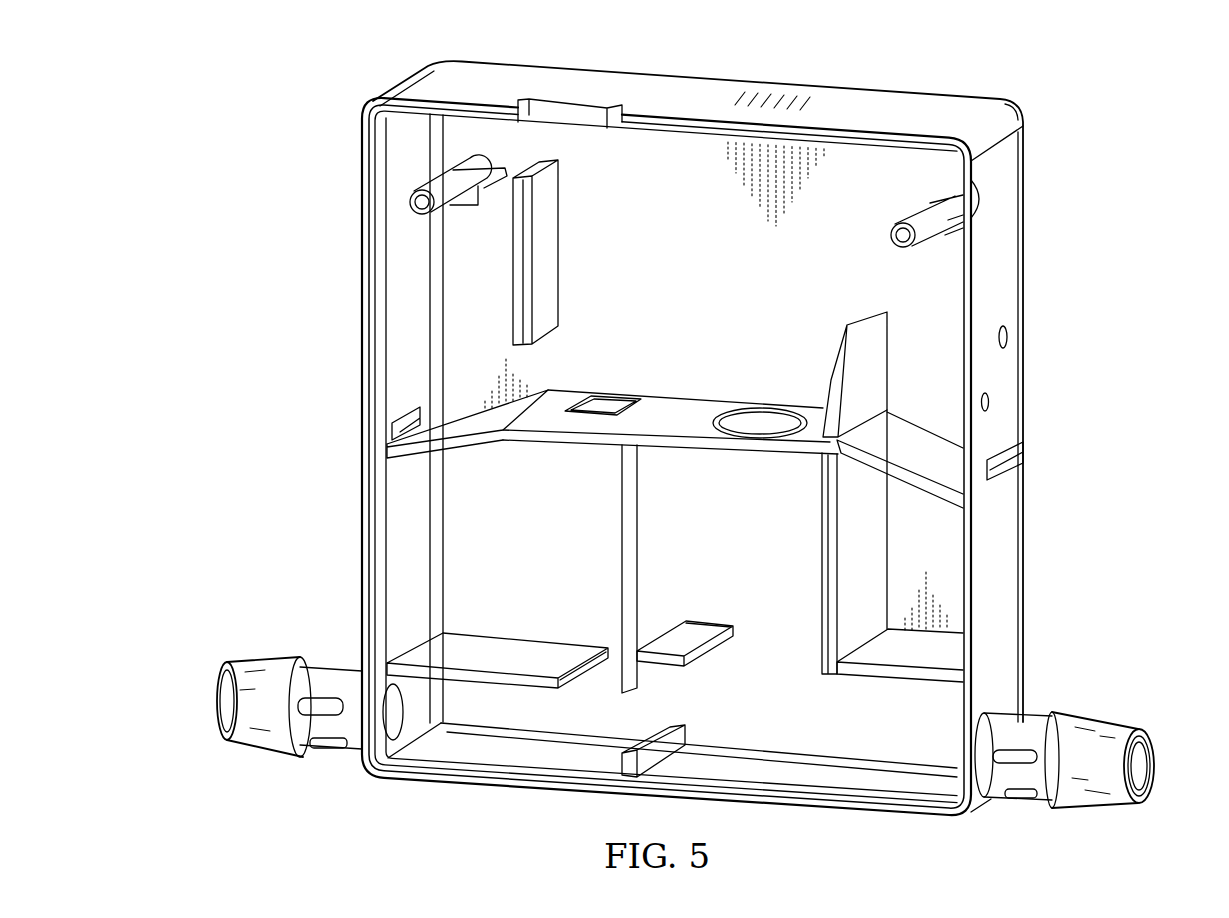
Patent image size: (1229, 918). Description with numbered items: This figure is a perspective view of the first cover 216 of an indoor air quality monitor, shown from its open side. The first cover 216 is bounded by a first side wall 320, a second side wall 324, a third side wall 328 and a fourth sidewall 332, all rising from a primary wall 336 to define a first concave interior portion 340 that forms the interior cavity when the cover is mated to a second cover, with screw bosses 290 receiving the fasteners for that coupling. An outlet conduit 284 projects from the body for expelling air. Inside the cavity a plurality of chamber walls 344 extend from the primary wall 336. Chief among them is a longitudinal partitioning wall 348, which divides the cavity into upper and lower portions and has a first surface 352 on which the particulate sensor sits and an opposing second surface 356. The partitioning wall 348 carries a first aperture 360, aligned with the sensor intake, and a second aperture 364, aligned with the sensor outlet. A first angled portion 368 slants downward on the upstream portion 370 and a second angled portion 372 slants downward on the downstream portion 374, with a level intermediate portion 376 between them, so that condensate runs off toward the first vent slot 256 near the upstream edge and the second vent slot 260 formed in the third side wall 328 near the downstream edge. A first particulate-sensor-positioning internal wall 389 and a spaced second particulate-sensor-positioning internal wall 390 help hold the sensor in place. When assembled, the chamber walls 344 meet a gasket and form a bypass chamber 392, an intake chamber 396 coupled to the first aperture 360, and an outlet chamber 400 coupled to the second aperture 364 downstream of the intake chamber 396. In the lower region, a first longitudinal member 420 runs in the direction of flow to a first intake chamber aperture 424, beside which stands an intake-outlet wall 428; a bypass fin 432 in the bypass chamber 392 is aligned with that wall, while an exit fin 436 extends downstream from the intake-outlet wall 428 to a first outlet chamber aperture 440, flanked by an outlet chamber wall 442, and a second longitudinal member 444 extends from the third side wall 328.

The first cover 216 is at (893, 99).
The first vent slot 256 is at (397, 418).
The second vent slot 260 is at (1007, 475).
The outlet conduit 284 is at (1094, 806).
The screw bosses 290 is at (438, 210).
The first side wall 320 is at (360, 476).
The second side wall 324 is at (490, 93).
The third side wall 328 is at (1002, 262).
The fourth sidewall 332 is at (488, 788).
The primary wall 336 is at (694, 242).
The first concave interior portion 340 is at (659, 163).
The plurality of chamber walls 344 is at (669, 533).
The longitudinal partitioning wall 348 is at (336, 408).
The first surface 352 is at (1026, 446).
The second surface 356 is at (932, 498).
The first aperture 360 is at (599, 416).
The second aperture 364 is at (750, 437).
The first angled portion 368 is at (336, 408).
The upstream portion 370 is at (472, 407).
The second angled portion 372 is at (1026, 446).
The downstream portion 374 is at (913, 443).
The intermediate portion 376 is at (666, 410).
The first particulate-sensor-positioning internal wall 389 is at (550, 240).
The second particulate-sensor-positioning internal wall 390 is at (843, 340).
The bypass chamber 392 is at (457, 745).
The intake chamber 396 is at (527, 555).
The outlet chamber 400 is at (763, 552).
The first longitudinal member 420 is at (506, 650).
The first intake chamber aperture 424 is at (577, 675).
The intake-outlet wall 428 is at (621, 501).
The bypass fin 432 is at (663, 718).
The exit fin 436 is at (706, 640).
The first outlet chamber aperture 440 is at (723, 627).
The outlet chamber wall 442 is at (823, 507).
The second longitudinal member 444 is at (893, 677).